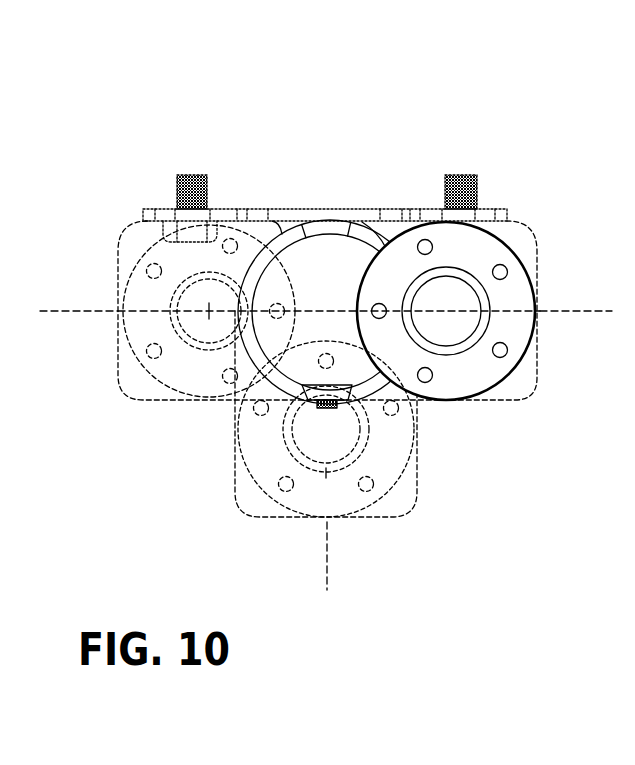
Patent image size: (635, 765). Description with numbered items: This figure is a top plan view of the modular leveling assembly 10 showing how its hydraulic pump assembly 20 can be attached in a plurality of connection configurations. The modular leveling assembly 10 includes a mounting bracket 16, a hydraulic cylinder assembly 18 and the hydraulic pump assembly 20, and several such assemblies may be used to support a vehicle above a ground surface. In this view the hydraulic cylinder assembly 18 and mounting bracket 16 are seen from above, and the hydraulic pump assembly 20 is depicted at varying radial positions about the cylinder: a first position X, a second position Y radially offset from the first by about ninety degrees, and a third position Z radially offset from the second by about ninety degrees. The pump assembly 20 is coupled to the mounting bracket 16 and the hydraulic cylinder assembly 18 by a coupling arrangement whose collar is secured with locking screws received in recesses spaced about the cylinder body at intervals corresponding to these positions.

The modular leveling assembly 10 is at (326, 329).
The mounting bracket 16 is at (487, 225).
The hydraulic cylinder assembly 18 is at (391, 218).
The hydraulic pump assembly 20 is at (546, 240).